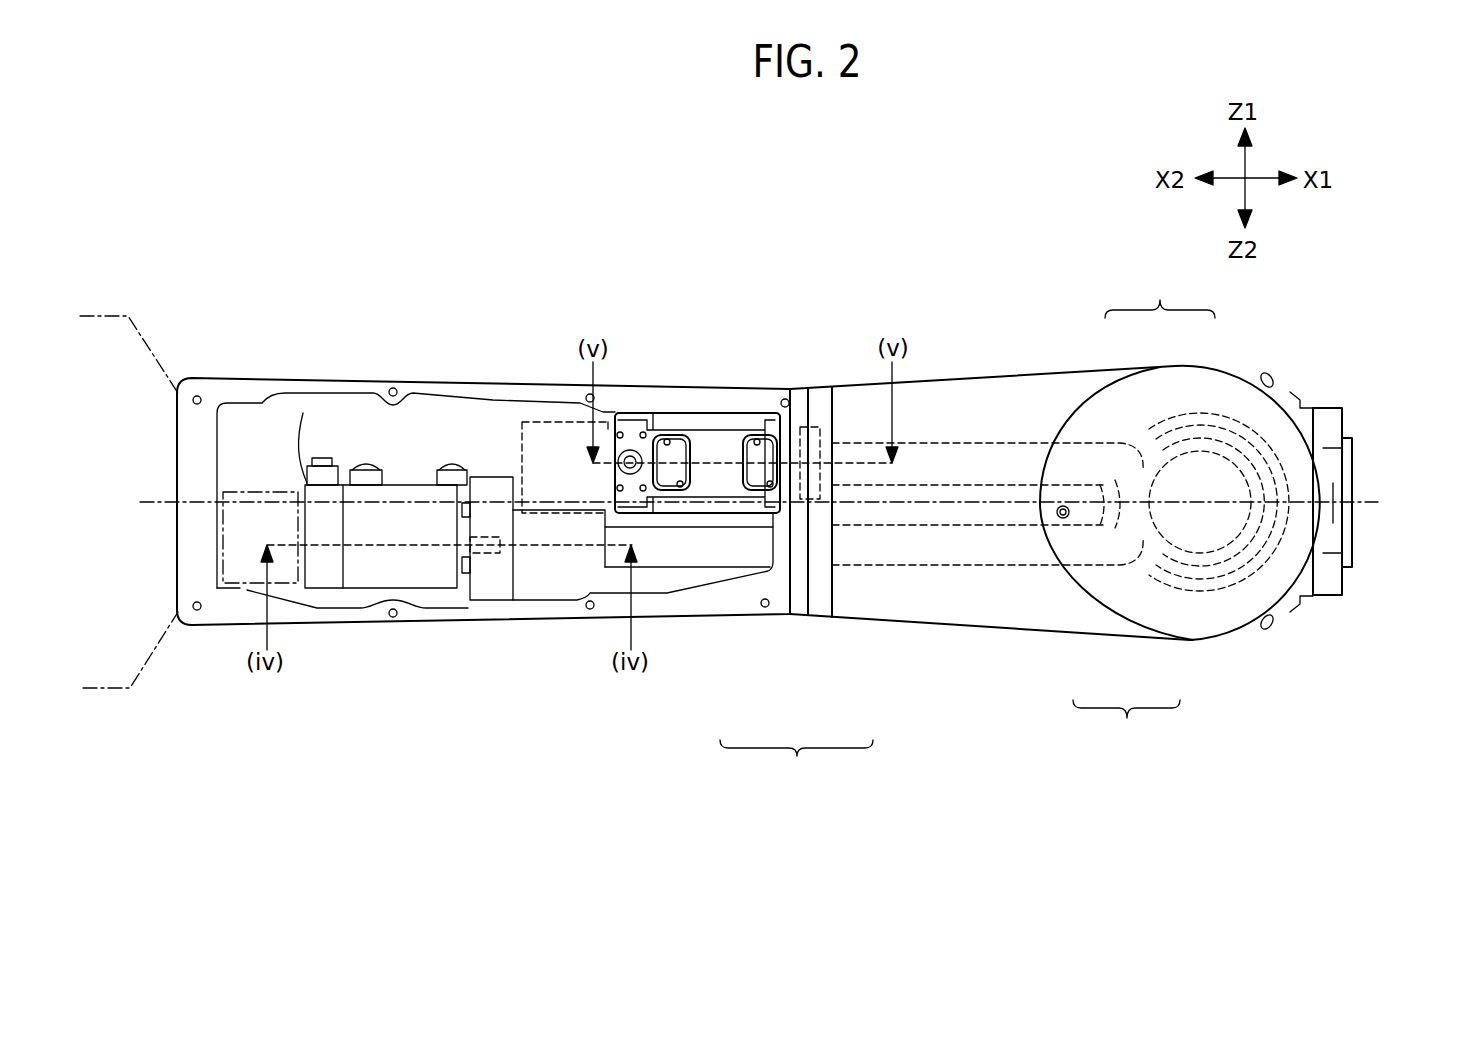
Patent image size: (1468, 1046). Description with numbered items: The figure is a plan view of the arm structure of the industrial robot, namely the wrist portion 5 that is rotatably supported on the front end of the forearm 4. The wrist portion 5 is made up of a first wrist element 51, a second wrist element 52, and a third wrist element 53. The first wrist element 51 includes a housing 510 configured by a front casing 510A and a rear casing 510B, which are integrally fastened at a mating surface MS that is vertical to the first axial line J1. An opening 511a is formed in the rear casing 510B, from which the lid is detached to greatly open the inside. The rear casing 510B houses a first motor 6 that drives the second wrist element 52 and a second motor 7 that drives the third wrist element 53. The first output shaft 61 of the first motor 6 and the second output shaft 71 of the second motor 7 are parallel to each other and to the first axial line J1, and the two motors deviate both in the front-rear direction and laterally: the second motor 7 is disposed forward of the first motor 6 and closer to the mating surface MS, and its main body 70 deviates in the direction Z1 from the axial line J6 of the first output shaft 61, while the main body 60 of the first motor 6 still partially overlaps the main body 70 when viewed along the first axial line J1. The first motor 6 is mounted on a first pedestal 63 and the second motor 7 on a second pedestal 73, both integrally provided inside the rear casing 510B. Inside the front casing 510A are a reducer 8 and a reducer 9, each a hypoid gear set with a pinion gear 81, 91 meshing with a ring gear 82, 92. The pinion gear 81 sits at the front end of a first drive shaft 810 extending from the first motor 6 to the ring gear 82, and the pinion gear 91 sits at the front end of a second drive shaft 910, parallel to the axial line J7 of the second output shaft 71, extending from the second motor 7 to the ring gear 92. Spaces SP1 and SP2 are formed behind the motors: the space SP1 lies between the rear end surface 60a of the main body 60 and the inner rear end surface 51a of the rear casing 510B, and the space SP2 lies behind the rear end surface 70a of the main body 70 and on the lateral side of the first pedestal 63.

The forearm 4 is at (125, 300).
The wrist portion 5 is at (828, 220).
The first wrist element 51 is at (968, 362).
The inner rear end surface 51a is at (230, 410).
The opening 511a is at (353, 402).
The second wrist element 52 is at (1322, 612).
The third wrist element 53 is at (1370, 550).
The first motor 6 is at (366, 608).
The main body 60 is at (423, 592).
The rear end surface 60a is at (305, 412).
The first output shaft 61 is at (493, 556).
The first pedestal 63 is at (487, 476).
The second motor 7 is at (648, 392).
The main body 70 is at (737, 412).
The rear end surface 70a is at (614, 412).
The second output shaft 71 is at (800, 450).
The second pedestal 73 is at (850, 420).
The reducer 8 is at (1126, 725).
The pinion gear 81 is at (1138, 560).
The ring gear 82 is at (1158, 578).
The reducer 9 is at (1160, 291).
The pinion gear 91 is at (1142, 450).
The ring gear 92 is at (1207, 443).
The housing 510 is at (796, 763).
The front casing 510A is at (880, 620).
The rear casing 510B is at (730, 616).
The first drive shaft 810 is at (990, 570).
The second drive shaft 910 is at (1022, 443).
The space SP1 is at (268, 490).
The space SP2 is at (545, 422).
The axial line J6 is at (548, 548).
The axial line J7 is at (707, 445).
The mating surface MS is at (800, 616).
The first axial line J1 is at (1412, 503).